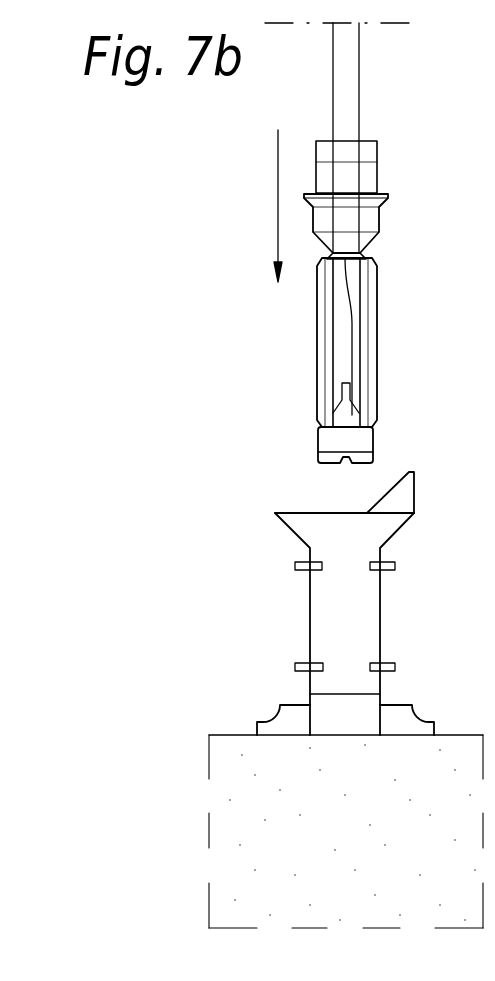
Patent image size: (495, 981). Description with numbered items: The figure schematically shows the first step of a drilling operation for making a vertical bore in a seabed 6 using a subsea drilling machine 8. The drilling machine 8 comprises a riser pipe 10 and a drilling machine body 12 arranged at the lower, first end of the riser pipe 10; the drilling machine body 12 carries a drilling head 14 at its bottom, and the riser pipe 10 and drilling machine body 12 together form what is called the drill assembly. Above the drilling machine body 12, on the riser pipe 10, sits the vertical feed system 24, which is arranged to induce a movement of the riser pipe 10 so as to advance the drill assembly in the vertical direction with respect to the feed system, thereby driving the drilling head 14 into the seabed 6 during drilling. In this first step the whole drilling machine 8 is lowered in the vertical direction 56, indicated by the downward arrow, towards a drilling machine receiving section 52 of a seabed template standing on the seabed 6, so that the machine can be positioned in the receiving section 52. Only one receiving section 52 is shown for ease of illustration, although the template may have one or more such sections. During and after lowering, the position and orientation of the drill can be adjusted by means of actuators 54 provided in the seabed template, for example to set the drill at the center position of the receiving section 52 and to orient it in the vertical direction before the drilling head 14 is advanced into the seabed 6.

The seabed 6 is at (231, 842).
The drilling machine 8 is at (296, 105).
The riser pipe 10 is at (359, 119).
The drilling machine body 12 is at (375, 350).
The drilling head 14 is at (373, 445).
The vertical feed system 24 is at (374, 175).
The drilling machine receiving section 52 is at (248, 583).
The actuators 54 is at (395, 565).
The vertical direction 56 is at (278, 214).